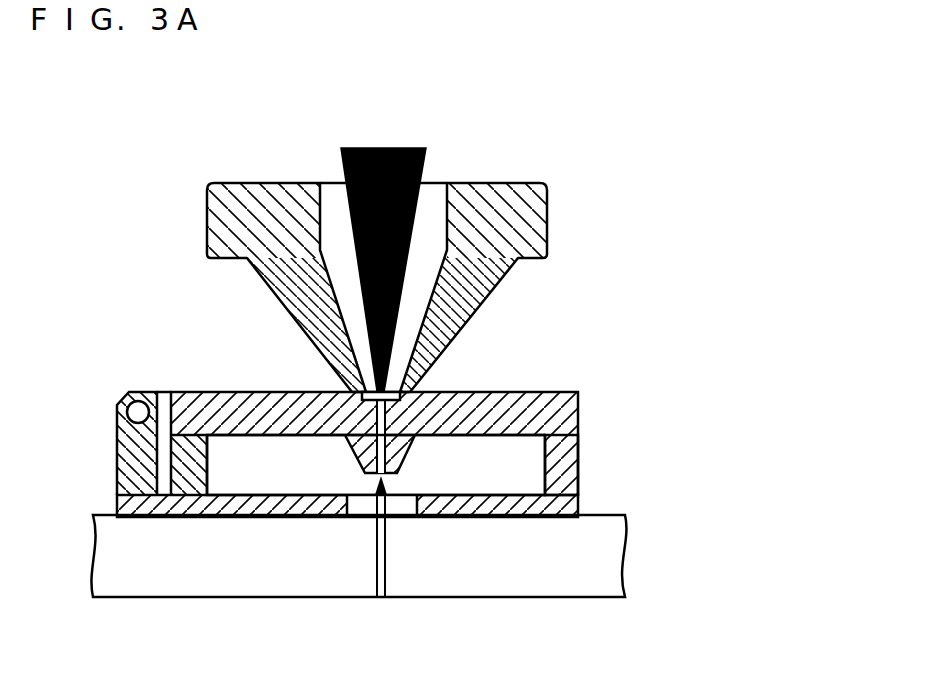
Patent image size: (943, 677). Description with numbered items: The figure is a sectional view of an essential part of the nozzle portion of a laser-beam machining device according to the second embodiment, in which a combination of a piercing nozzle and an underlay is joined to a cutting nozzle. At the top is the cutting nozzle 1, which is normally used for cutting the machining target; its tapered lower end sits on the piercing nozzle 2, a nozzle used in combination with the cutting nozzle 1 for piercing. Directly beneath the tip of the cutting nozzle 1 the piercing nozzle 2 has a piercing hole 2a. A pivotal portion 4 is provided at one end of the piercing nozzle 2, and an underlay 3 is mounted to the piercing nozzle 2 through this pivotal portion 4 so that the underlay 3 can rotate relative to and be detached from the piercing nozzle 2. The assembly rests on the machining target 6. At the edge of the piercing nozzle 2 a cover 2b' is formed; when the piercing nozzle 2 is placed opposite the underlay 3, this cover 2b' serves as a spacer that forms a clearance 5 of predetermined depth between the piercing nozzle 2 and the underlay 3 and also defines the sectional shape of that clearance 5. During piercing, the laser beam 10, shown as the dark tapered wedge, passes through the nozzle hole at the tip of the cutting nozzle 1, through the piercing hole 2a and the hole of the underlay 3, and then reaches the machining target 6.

The cutting nozzle 1 is at (518, 217).
The laser beam 10 is at (425, 158).
The piercing nozzle 2 is at (459, 382).
The piercing hole 2a is at (393, 418).
The cover 2b' is at (646, 445).
The underlay 3 is at (553, 506).
The pivotal portion 4 is at (138, 413).
The clearance 5 is at (263, 463).
The machining target 6 is at (592, 568).